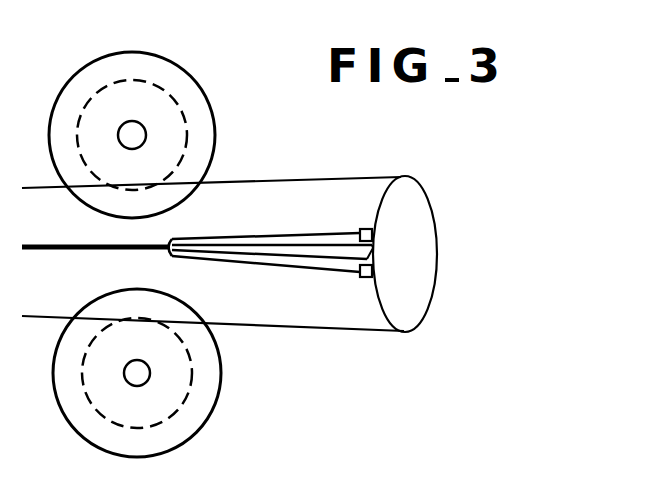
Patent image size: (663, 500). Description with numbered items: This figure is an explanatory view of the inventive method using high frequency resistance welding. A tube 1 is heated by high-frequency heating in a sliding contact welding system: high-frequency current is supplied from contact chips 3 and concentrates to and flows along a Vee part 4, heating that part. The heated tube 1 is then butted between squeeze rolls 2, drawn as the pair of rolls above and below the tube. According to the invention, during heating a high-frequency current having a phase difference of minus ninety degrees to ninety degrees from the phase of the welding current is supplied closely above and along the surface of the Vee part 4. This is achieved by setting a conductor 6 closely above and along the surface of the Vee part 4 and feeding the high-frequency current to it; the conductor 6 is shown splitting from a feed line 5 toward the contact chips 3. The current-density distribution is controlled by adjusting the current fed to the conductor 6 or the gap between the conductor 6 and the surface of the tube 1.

The tube 1 is at (307, 197).
The squeeze rolls 2 is at (160, 66).
The contact chip 3 is at (366, 229).
The Vee part 4 is at (373, 248).
The wire 5 is at (52, 250).
The conductor 6 is at (258, 238).